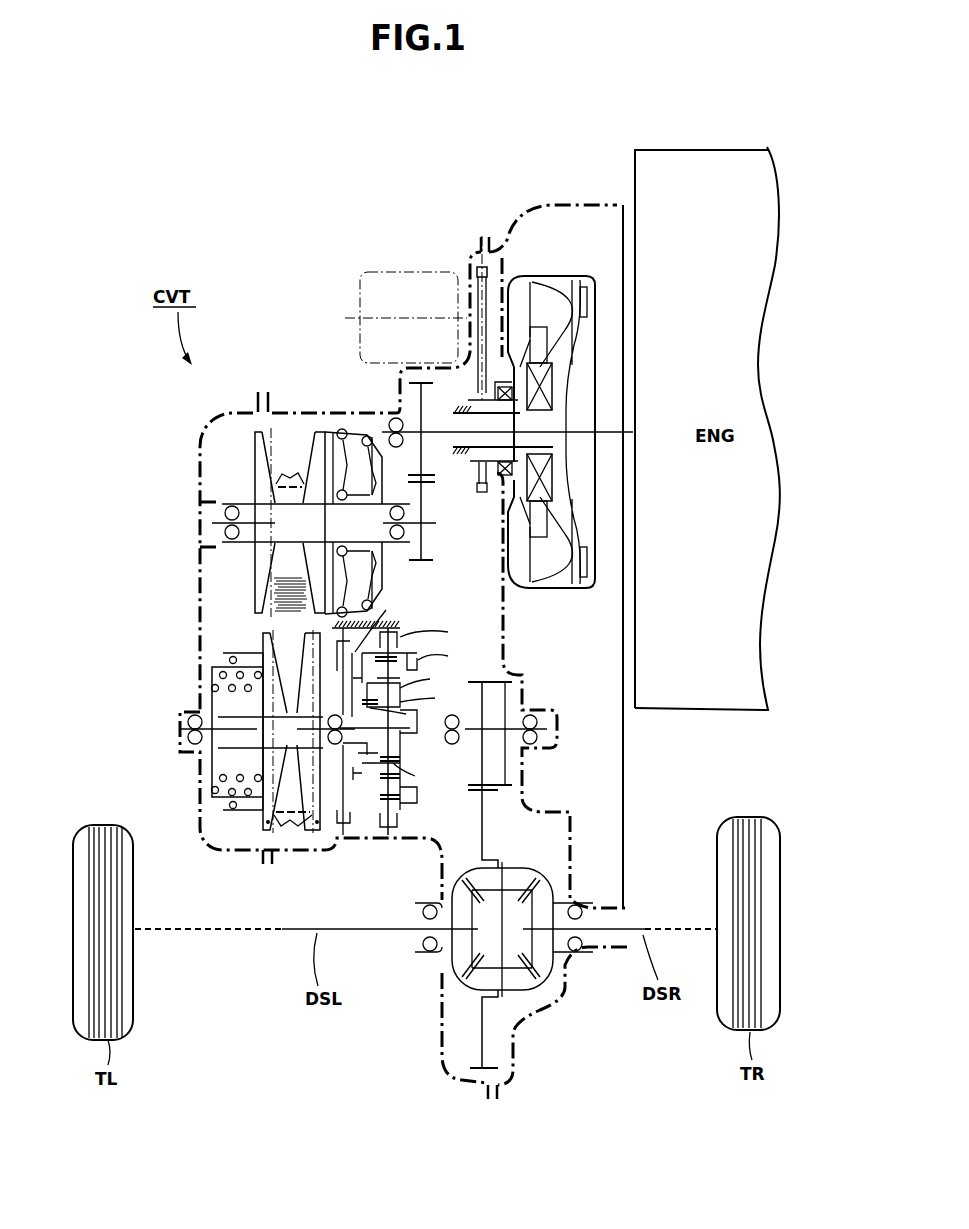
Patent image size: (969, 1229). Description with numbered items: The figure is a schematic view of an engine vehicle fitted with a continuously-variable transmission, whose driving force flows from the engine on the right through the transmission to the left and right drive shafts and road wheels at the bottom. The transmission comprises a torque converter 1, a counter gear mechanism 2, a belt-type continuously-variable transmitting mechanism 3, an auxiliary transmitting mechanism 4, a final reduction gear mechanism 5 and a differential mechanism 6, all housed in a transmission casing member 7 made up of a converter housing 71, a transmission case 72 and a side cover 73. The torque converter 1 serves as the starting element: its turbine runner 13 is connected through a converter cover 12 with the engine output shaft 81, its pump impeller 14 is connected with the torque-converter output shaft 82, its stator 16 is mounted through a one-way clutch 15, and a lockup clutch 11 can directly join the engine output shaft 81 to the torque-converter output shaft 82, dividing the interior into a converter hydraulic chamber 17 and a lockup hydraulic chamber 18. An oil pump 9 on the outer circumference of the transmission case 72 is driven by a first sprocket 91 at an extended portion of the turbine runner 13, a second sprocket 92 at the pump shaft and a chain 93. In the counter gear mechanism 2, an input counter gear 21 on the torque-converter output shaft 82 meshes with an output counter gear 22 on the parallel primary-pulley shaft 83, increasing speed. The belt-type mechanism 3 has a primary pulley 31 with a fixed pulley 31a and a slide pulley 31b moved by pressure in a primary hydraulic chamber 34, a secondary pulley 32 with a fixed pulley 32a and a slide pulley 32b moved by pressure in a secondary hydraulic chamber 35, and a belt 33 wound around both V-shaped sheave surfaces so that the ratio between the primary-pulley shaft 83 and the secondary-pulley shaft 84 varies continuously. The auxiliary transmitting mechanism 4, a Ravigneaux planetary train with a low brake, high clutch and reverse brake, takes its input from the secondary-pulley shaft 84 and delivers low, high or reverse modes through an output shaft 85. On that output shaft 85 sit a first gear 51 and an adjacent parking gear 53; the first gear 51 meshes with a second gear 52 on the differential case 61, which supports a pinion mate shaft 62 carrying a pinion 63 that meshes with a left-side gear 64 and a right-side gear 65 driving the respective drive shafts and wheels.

The torque converter 1 is at (570, 435).
The counter gear mechanism 2 is at (437, 506).
The belt-type continuously-variable transmitting mechanism 3 is at (255, 622).
The auxiliary transmitting mechanism 4 is at (415, 621).
The final reduction gear mechanism 5 is at (511, 863).
The differential mechanism 6 is at (506, 945).
The transmission casing member 7 is at (283, 398).
The oil pump 9 is at (386, 270).
The lockup clutch 11 is at (588, 530).
The converter cover 12 is at (576, 272).
The turbine runner 13 is at (523, 560).
The pump impeller 14 is at (550, 550).
The one-way clutch 15 is at (552, 393).
The stator 16 is at (540, 513).
The converter hydraulic chamber 17 is at (568, 557).
The lockup hydraulic chamber 18 is at (582, 468).
The input counter gear 21 is at (396, 502).
The output counter gear 22 is at (418, 566).
The primary pulley 31 is at (276, 497).
The fixed pulley 31a is at (264, 483).
The slide pulley 31b is at (318, 468).
The secondary pulley 32 is at (252, 762).
The fixed pulley 32a is at (317, 826).
The slide pulley 32b is at (268, 826).
The belt 33 is at (255, 623).
The primary hydraulic chamber 34 is at (377, 483).
The secondary hydraulic chamber 35 is at (229, 764).
The first gear 51 is at (480, 681).
The second gear 52 is at (470, 789).
The parking gear 53 is at (498, 791).
The differential case 61 is at (523, 873).
The pinion mate shaft 62 is at (503, 883).
The pinion 63 is at (485, 890).
The left-side gear 64 is at (470, 943).
The right-side gear 65 is at (533, 943).
The converter housing 71 is at (546, 203).
The transmission case 72 is at (313, 412).
The side cover 73 is at (200, 447).
The engine output shaft 81 is at (633, 428).
The torque-converter output shaft 82 is at (430, 433).
The primary-pulley shaft 83 is at (434, 524).
The secondary-pulley shaft 84 is at (345, 735).
The output shaft 85 is at (442, 738).
The first sprocket 91 is at (410, 476).
The second sprocket 92 is at (477, 297).
The chain 93 is at (480, 278).